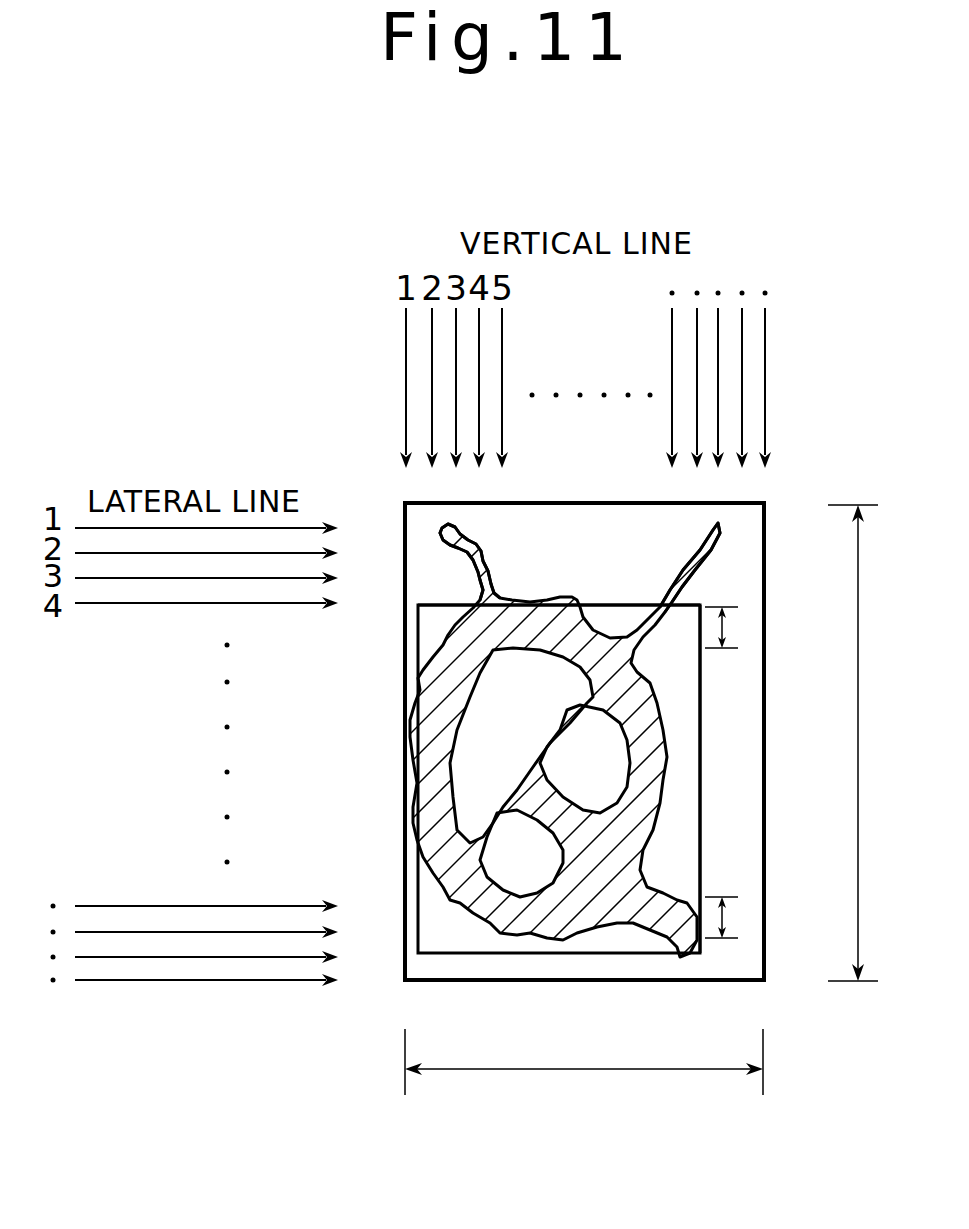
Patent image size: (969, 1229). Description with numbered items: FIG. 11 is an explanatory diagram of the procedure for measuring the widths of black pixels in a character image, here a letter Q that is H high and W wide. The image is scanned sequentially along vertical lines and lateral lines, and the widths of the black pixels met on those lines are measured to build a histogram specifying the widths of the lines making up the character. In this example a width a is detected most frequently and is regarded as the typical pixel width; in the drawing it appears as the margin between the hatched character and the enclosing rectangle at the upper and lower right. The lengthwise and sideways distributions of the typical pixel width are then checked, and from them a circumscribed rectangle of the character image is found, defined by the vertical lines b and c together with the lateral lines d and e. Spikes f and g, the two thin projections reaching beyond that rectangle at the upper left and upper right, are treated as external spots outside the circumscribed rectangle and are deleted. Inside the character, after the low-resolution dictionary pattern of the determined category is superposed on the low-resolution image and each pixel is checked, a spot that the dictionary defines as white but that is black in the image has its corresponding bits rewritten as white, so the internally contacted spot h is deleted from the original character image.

The width a is at (729, 771).
The vertical line b is at (418, 937).
The vertical line c is at (700, 752).
The lateral line d is at (624, 604).
The lateral line e is at (594, 955).
The spike f is at (466, 539).
The spike g is at (698, 556).
The internally contacted spot h is at (556, 740).
The height of character image H is at (863, 743).
The width of character image W is at (584, 1069).